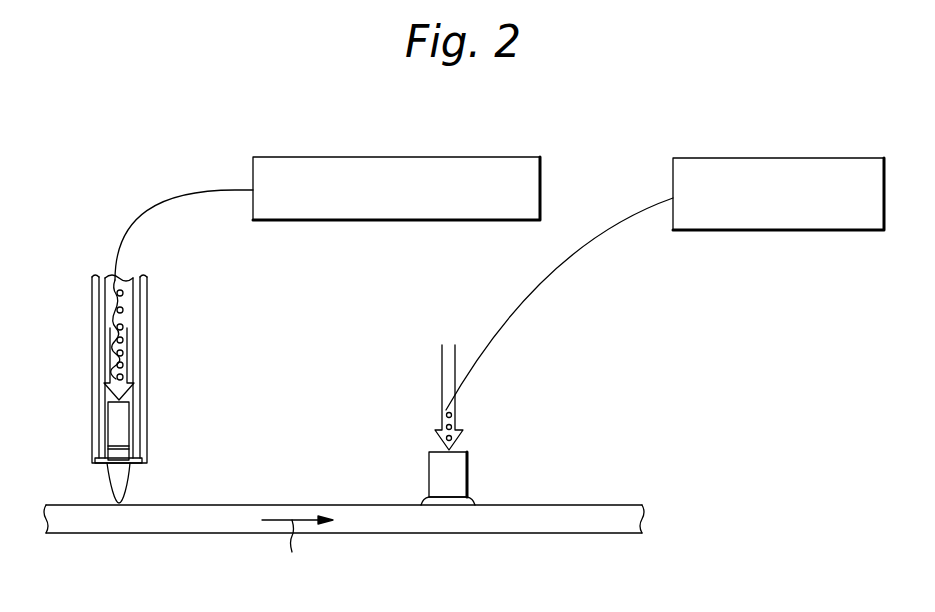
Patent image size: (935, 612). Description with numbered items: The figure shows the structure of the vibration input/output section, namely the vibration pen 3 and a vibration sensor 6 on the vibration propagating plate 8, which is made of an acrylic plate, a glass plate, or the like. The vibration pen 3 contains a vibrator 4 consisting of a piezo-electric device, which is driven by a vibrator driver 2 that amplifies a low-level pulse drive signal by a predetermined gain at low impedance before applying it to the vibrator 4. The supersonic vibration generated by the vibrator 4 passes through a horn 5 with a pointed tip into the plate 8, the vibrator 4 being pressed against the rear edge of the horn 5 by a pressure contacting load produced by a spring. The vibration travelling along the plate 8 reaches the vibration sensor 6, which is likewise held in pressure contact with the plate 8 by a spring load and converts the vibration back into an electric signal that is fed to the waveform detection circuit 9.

The vibrator driver 2 is at (540, 190).
The vibration pen 3 is at (91, 324).
The vibrator 4 is at (110, 405).
The horn 5 is at (112, 477).
The vibration sensor 6 is at (468, 455).
The vibration propagating plate 8 is at (635, 533).
The waveform detection circuit 9 is at (884, 193).